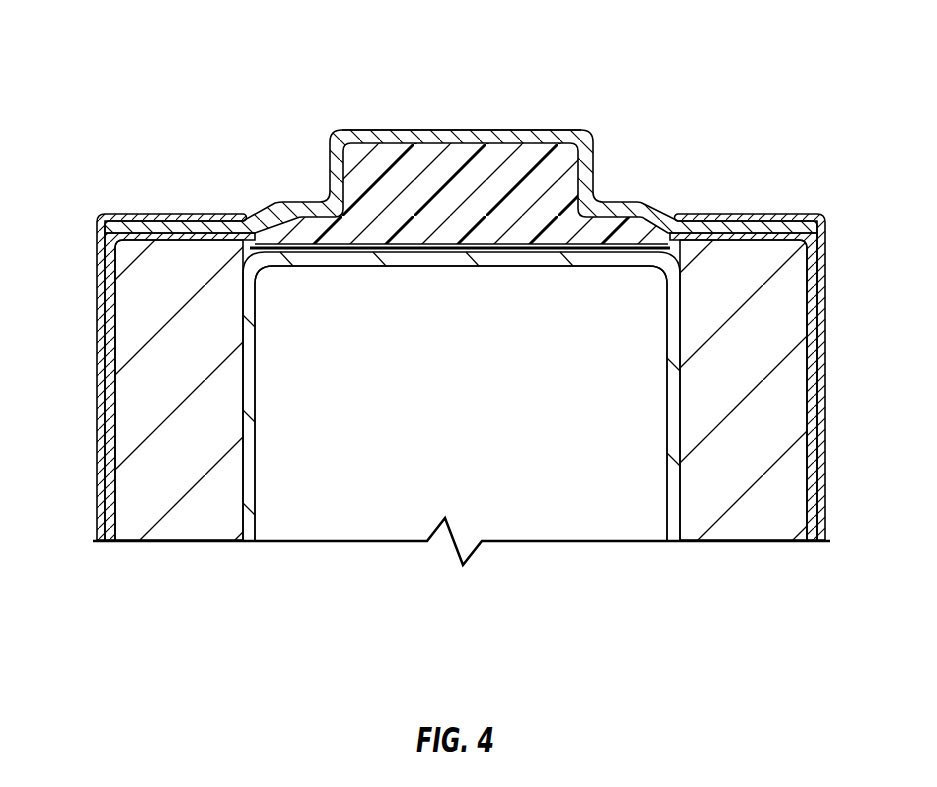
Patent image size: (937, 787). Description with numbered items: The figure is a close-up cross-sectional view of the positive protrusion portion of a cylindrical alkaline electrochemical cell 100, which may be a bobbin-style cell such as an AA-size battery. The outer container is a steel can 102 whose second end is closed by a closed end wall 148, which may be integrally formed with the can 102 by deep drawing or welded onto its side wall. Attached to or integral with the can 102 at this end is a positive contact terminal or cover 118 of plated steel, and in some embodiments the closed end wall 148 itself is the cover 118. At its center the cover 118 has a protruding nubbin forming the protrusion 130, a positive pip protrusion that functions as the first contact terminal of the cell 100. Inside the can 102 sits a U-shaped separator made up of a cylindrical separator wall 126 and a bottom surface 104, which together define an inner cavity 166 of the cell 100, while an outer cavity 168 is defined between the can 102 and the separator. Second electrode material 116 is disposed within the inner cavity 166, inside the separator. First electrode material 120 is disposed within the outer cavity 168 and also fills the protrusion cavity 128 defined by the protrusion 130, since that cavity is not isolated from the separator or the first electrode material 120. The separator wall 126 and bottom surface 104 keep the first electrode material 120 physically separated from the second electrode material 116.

The electrochemical cell 100 is at (174, 108).
The can 102 is at (113, 287).
The bottom surface 104 is at (672, 242).
The second electrode material 116 is at (318, 503).
The positive contact terminal or cover 118 is at (637, 203).
The first electrode material 120 is at (330, 172).
The cylindrical separator wall 126 is at (670, 362).
The protrusion cavity 128 is at (421, 154).
The protrusion 130 is at (518, 130).
The closed end wall 148 is at (235, 233).
The inner cavity 166 is at (413, 532).
The outer cavity 168 is at (187, 532).